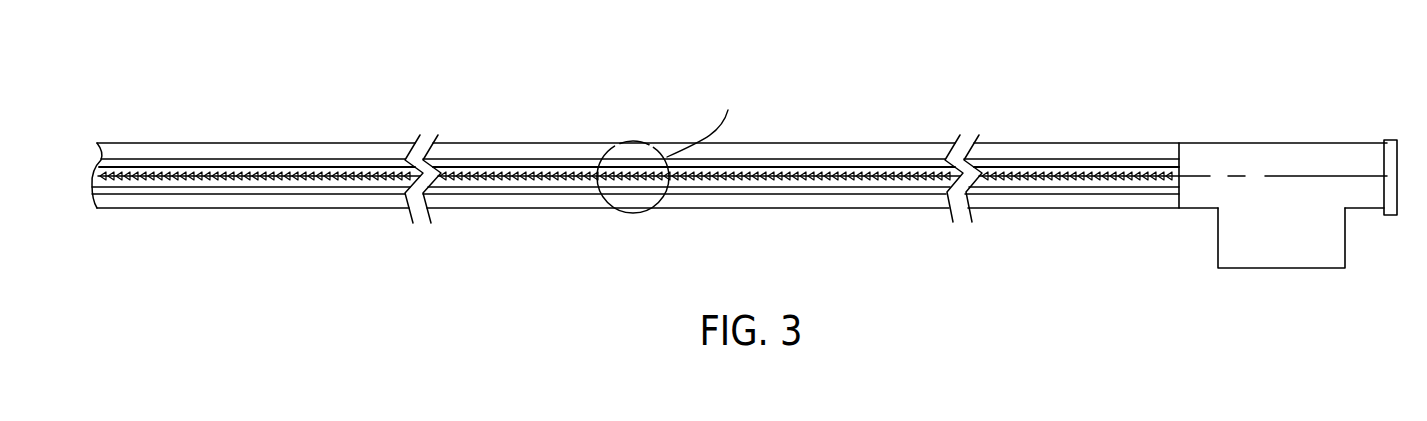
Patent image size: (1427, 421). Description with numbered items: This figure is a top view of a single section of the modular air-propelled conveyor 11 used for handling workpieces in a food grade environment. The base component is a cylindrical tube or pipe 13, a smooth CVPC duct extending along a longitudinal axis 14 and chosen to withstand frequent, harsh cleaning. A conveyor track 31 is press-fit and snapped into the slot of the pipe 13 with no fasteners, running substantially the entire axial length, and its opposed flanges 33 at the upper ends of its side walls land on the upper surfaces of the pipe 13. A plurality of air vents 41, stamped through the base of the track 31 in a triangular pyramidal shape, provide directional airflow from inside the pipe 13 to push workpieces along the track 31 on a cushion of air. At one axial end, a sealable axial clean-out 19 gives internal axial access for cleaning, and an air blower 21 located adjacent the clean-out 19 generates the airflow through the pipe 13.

The air-propelled conveyor 11 is at (739, 184).
The cylindrical tube or pipe 13 is at (459, 142).
The longitudinal axis 14 is at (1232, 177).
The axial clean-out 19 is at (1388, 140).
The air blower 21 is at (1263, 260).
The conveyor track 31 is at (568, 157).
The opposed flanges 33 is at (512, 165).
The air vents 41 is at (630, 173).